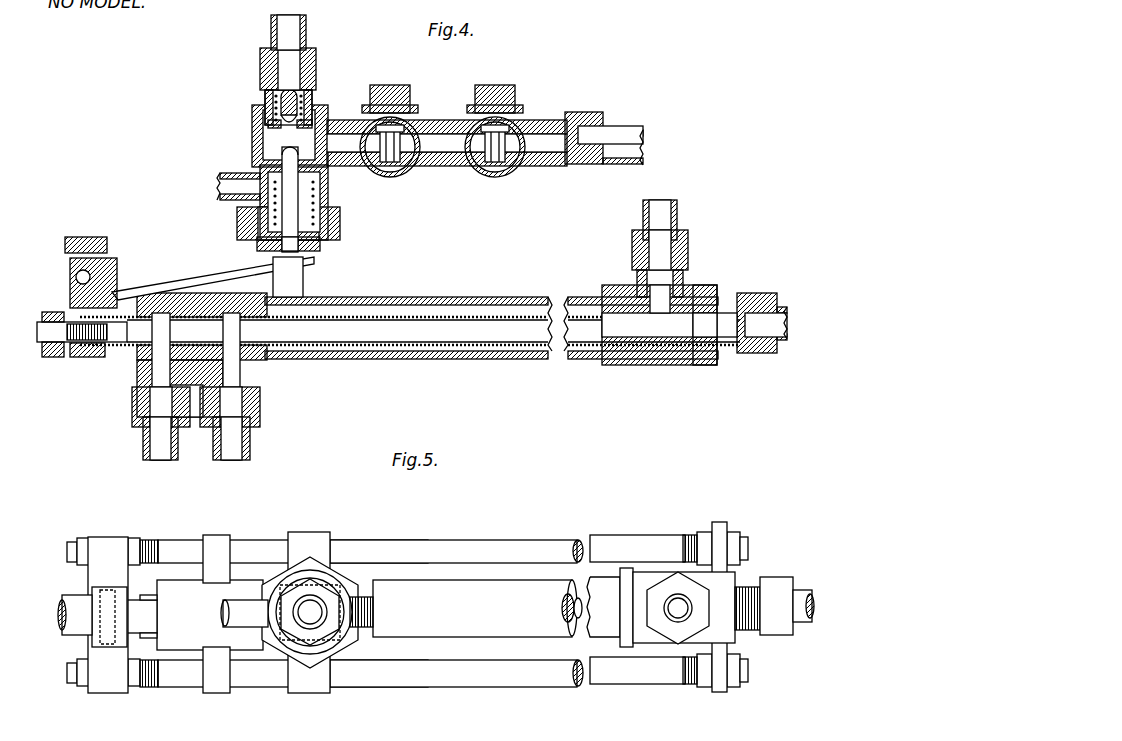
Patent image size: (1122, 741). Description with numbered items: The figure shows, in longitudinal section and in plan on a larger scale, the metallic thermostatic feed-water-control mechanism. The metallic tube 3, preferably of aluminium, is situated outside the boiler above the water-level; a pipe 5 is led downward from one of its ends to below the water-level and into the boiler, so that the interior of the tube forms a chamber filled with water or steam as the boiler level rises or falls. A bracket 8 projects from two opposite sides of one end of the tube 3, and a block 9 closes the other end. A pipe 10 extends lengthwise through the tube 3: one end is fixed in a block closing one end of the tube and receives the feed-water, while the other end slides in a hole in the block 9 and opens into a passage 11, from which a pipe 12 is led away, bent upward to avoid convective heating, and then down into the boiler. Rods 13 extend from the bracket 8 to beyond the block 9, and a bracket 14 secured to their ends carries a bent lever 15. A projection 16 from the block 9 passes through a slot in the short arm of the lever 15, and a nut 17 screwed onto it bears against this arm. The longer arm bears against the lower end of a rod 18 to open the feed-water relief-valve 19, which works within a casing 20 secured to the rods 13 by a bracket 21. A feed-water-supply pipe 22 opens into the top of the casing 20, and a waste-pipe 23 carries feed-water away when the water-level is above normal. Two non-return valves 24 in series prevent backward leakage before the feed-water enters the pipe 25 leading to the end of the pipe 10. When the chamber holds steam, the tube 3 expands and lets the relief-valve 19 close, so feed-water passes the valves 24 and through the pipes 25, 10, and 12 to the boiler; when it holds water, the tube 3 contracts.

In FIG. 4, the metallic tube 3 is at (404, 304).
In FIG. 5, the metallic tube 3 is at (406, 654).
In FIG. 4, the pipe 5 is at (242, 442).
In FIG. 4, the bracket 8 is at (704, 286).
In FIG. 5, the bracket 8 is at (719, 586).
In FIG. 4, the block 9 is at (188, 315).
In FIG. 5, the block 9 is at (196, 640).
In FIG. 4, the pipe 10 is at (330, 347).
In FIG. 5, the pipe 10 is at (562, 612).
In FIG. 4, the passage 11 is at (159, 372).
In FIG. 4, the pipe 12 is at (150, 450).
In FIG. 5, the rods 13 is at (178, 552).
In FIG. 4, the bracket 14 is at (84, 237).
In FIG. 5, the bracket 14 is at (102, 547).
In FIG. 4, the bent lever 15 is at (220, 278).
In FIG. 5, the bent lever 15 is at (212, 614).
In FIG. 4, the projection 16 is at (38, 322).
In FIG. 5, the projection 16 is at (50, 614).
In FIG. 4, the nut 17 is at (60, 358).
In FIG. 5, the nut 17 is at (70, 630).
In FIG. 4, the rod 18 is at (314, 251).
In FIG. 4, the feed-water relief-valve 19 is at (268, 141).
In FIG. 4, the casing 20 is at (260, 154).
In FIG. 5, the casing 20 is at (326, 588).
In FIG. 4, the bracket 21 is at (341, 226).
In FIG. 5, the bracket 21 is at (314, 542).
In FIG. 4, the feed-water-supply pipe 22 is at (270, 30).
In FIG. 5, the feed-water-supply pipe 22 is at (302, 632).
In FIG. 4, the waste-pipe 23 is at (217, 189).
In FIG. 5, the waste-pipe 23 is at (254, 628).
In FIG. 4, the non-return valves 24 is at (394, 175).
In FIG. 4, the pipe 25 is at (643, 144).
In FIG. 5, the pipe 25 is at (812, 626).